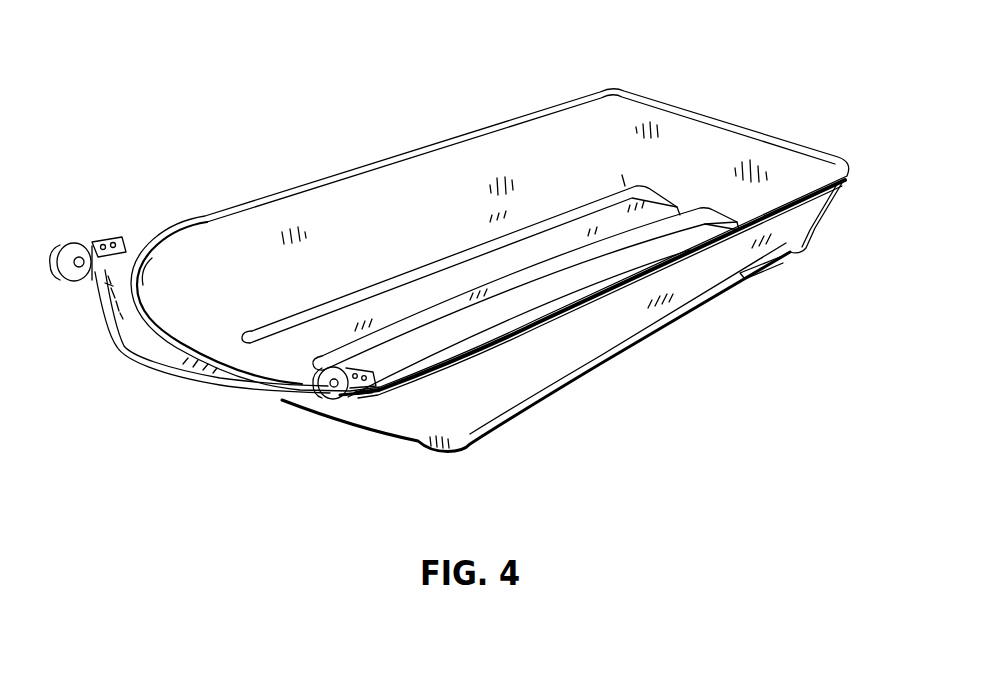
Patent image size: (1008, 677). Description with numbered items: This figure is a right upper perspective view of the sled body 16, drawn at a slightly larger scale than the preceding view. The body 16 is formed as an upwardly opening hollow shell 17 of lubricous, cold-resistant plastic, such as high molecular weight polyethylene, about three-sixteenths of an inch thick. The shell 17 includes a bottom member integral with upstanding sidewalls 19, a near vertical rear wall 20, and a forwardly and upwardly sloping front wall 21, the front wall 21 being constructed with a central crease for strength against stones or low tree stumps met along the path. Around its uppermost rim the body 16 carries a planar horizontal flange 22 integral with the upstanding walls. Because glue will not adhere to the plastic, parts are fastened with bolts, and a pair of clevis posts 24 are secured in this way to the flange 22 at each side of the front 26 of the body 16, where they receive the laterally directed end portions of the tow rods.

The body 16 is at (799, 223).
The hollow shell 17 is at (733, 260).
The sidewalls 19 is at (538, 138).
The rear wall 20 is at (770, 160).
The front wall 21 is at (388, 422).
The flange 22 is at (715, 120).
The clevis posts 24 is at (70, 241).
The front 26 is at (143, 283).